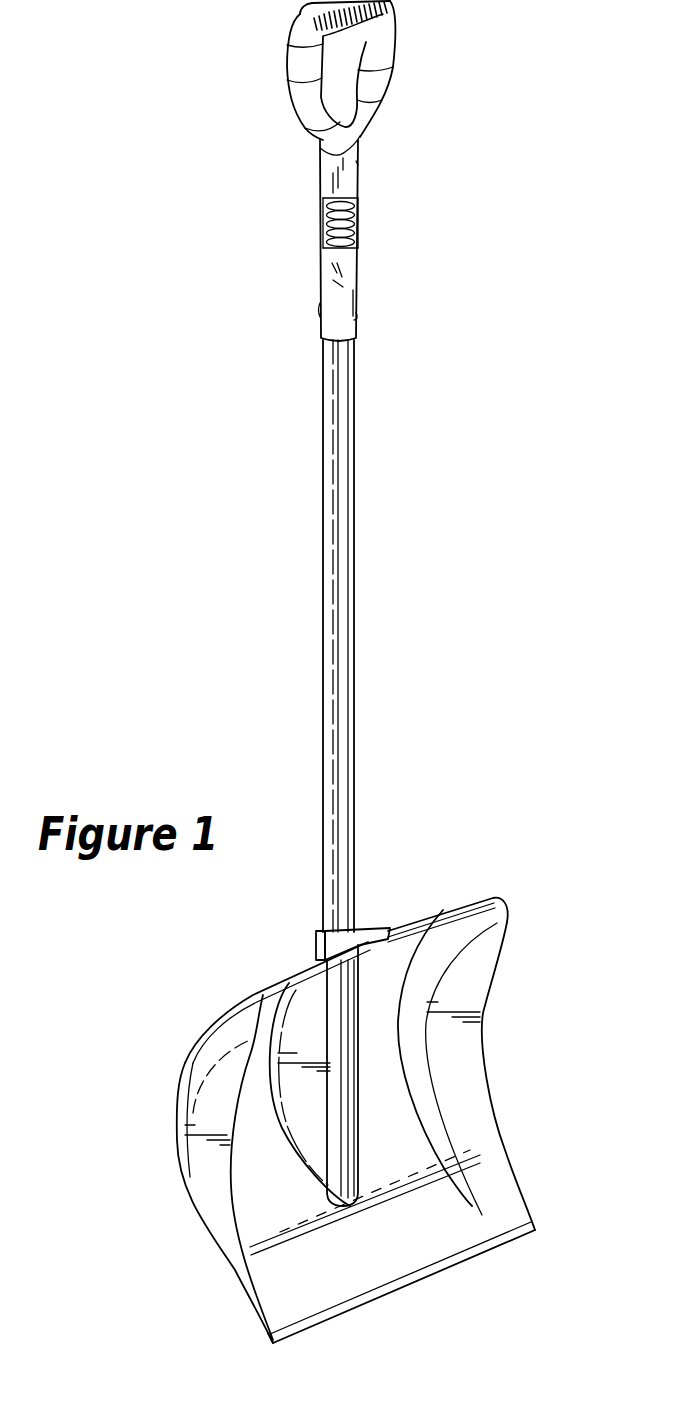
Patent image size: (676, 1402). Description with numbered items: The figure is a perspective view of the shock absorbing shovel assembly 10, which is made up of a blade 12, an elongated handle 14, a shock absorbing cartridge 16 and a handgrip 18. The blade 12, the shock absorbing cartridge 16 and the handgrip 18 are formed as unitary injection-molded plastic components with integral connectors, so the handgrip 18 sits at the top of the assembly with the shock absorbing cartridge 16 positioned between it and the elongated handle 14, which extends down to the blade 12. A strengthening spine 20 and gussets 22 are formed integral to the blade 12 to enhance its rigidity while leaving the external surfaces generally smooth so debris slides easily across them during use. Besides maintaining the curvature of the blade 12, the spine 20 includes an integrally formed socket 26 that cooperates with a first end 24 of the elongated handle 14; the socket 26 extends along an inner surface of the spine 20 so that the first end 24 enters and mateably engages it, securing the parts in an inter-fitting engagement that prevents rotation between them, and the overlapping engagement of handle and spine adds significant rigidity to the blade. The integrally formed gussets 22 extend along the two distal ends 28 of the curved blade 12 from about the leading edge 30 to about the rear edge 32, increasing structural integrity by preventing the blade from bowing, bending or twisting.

The shock absorbing shovel assembly 10 is at (185, 355).
The blade 12 is at (245, 985).
The elongated handle 14 is at (372, 612).
The shock absorbing cartridge 16 is at (381, 232).
The handgrip 18 is at (397, 48).
The strengthening spine 20 is at (340, 1140).
The gussets 22 is at (478, 1078).
The first end of the elongated handle 24 is at (355, 915).
The socket 26 is at (322, 935).
The distal ends of the curved blade 28 is at (182, 1170).
The leading edge 30 is at (380, 1294).
The rear edge 32 is at (452, 907).